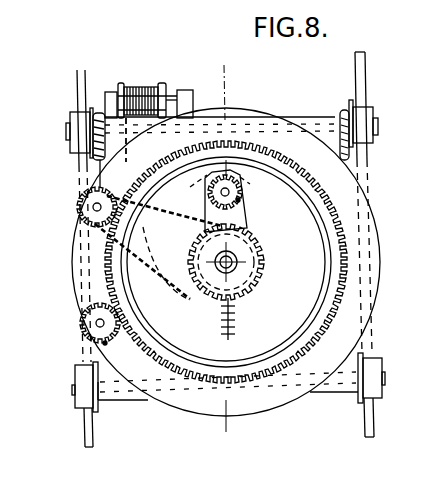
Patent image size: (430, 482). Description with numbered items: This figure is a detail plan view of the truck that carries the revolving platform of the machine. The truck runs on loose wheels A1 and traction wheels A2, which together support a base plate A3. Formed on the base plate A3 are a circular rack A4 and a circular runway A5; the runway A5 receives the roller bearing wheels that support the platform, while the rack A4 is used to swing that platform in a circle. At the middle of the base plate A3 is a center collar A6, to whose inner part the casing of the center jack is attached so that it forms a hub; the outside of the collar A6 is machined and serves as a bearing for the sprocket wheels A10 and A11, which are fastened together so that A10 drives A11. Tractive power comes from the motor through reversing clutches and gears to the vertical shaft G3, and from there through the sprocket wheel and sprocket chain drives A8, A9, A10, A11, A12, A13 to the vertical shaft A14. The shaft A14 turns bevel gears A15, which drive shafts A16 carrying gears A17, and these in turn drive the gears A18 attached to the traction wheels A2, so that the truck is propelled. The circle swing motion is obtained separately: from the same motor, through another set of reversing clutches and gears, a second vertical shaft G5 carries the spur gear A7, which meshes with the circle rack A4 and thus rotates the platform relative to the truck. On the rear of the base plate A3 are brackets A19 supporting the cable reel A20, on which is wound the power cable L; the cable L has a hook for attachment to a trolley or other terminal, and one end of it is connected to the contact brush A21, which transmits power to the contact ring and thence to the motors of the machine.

The loose wheels A1 is at (75, 371).
The traction wheels A2 is at (68, 118).
The base plate A3 is at (117, 350).
The circular rack A4 is at (108, 267).
The circular runway A5 is at (80, 285).
The center collar A6 is at (240, 265).
The spur gear A7 is at (82, 323).
The sprocket wheel A8 is at (80, 207).
The sprocket chain A9 is at (104, 229).
The sprocket wheel A10 is at (262, 262).
The sprocket wheel A11 is at (261, 245).
The sprocket wheel A12 is at (242, 221).
The sprocket chain A13 is at (245, 210).
The vertical shaft A14 is at (240, 201).
The bevel gears A15 is at (241, 193).
The shafts A16 is at (100, 183).
The gears A17 is at (93, 158).
The gears A18 is at (97, 110).
The brackets A19 is at (183, 90).
The cable reel A20 is at (160, 84).
The contact brush A21 is at (233, 332).
The vertical shaft G3 is at (93, 209).
The vertical shaft G5 is at (84, 316).
The power cable L is at (153, 83).